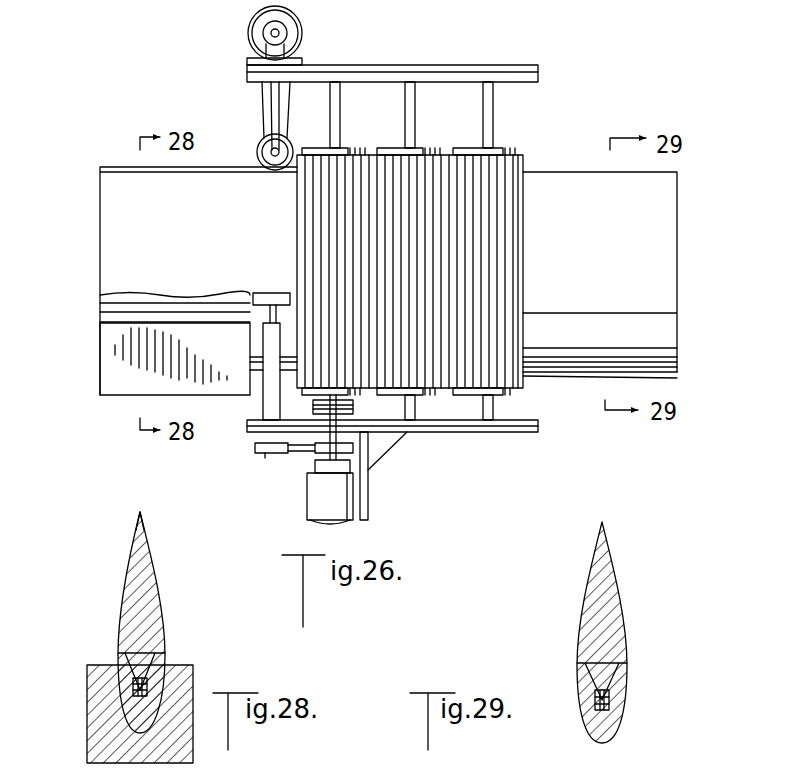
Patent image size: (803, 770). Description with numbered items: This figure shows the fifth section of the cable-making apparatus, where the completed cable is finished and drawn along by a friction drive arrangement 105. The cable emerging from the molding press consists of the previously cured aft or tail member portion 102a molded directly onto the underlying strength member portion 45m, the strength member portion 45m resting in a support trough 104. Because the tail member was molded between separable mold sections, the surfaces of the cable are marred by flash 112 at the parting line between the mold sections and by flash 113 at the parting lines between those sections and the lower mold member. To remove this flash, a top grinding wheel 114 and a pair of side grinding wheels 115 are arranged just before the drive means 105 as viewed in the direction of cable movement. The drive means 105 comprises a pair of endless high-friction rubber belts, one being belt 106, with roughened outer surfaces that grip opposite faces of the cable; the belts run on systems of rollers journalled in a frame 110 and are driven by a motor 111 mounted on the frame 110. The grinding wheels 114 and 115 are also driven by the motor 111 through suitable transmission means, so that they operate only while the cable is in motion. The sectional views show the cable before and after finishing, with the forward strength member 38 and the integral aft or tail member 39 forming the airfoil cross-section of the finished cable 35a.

In FIG. 26, the frame 110 is at (441, 74).
In FIG. 26, the friction drive arrangement 105 is at (549, 127).
In FIG. 26, the endless belt 106 is at (523, 258).
In FIG. 26, the top grinding wheel 114 is at (258, 150).
In FIG. 26, the flash 112 is at (108, 162).
In FIG. 28, the flash 112 is at (140, 512).
In FIG. 26, the aft or tail member portion 102a is at (117, 248).
In FIG. 28, the aft or tail member portion 102a is at (118, 615).
In FIG. 26, the strength member portion 45m is at (100, 312).
In FIG. 28, the strength member portion 45m is at (165, 688).
In FIG. 26, the support trough 104 is at (117, 384).
In FIG. 28, the support trough 104 is at (92, 747).
In FIG. 26, the flash 113 is at (186, 296).
In FIG. 28, the flash 113 is at (115, 647).
In FIG. 26, the side grinding wheels 115 is at (273, 293).
In FIG. 26, the aft or tail member 39 is at (677, 258).
In FIG. 26, the forward strength member 38 is at (665, 348).
In FIG. 26, the cable 35a is at (570, 378).
In FIG. 29, the cable 35a is at (637, 614).
In FIG. 26, the motor 111 is at (312, 500).